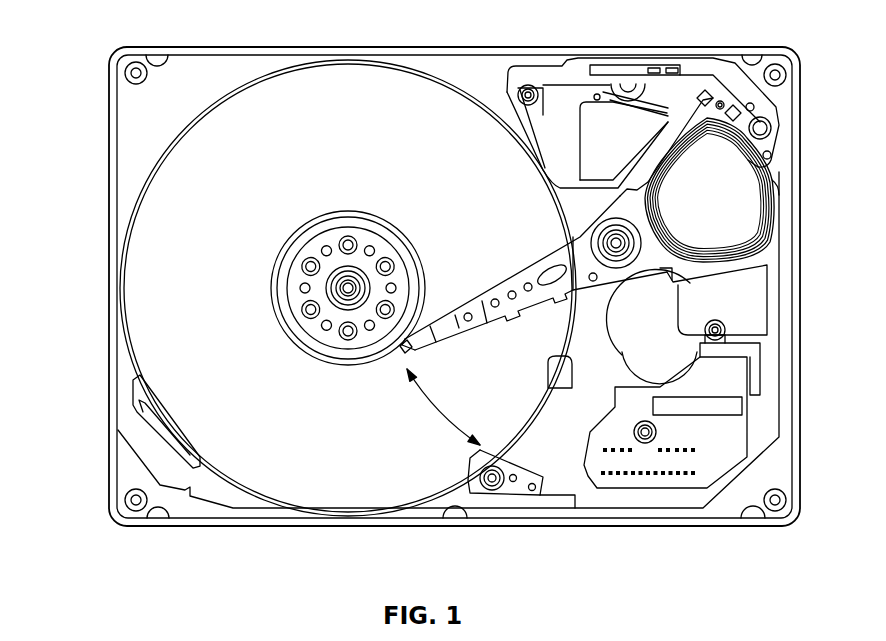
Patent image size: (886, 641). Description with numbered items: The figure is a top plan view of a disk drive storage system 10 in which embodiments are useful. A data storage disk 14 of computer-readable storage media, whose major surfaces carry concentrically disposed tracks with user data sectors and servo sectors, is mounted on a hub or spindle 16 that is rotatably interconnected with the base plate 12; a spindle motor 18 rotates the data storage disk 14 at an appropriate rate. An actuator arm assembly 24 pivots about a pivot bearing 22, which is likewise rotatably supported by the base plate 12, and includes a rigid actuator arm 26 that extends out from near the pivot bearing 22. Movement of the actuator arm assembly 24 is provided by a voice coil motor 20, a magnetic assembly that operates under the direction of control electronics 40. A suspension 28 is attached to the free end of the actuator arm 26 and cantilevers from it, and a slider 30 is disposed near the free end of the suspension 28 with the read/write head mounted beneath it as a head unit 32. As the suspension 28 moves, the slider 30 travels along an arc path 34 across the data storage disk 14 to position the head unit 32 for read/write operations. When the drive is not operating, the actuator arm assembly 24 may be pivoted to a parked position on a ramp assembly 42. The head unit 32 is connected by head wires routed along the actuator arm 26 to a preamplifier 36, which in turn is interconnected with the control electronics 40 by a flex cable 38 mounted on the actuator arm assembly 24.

The disk drive storage system 10 is at (93, 106).
The base plate 12 is at (258, 45).
The data storage disk 14 is at (360, 93).
The spindle 16 is at (370, 213).
The spindle motor 18 is at (333, 272).
The voice coil motor 20 is at (723, 205).
The pivot bearing 22 is at (633, 241).
The actuator arm assembly 24 is at (537, 257).
The actuator arm 26 is at (505, 313).
The suspension 28 is at (440, 314).
The slider 30 is at (417, 350).
The head unit 32 is at (400, 356).
The arc path 34 is at (425, 400).
The preamplifier 36 is at (650, 306).
The flex cable 38 is at (663, 382).
The control electronics 40 is at (655, 480).
The ramp assembly 42 is at (515, 494).